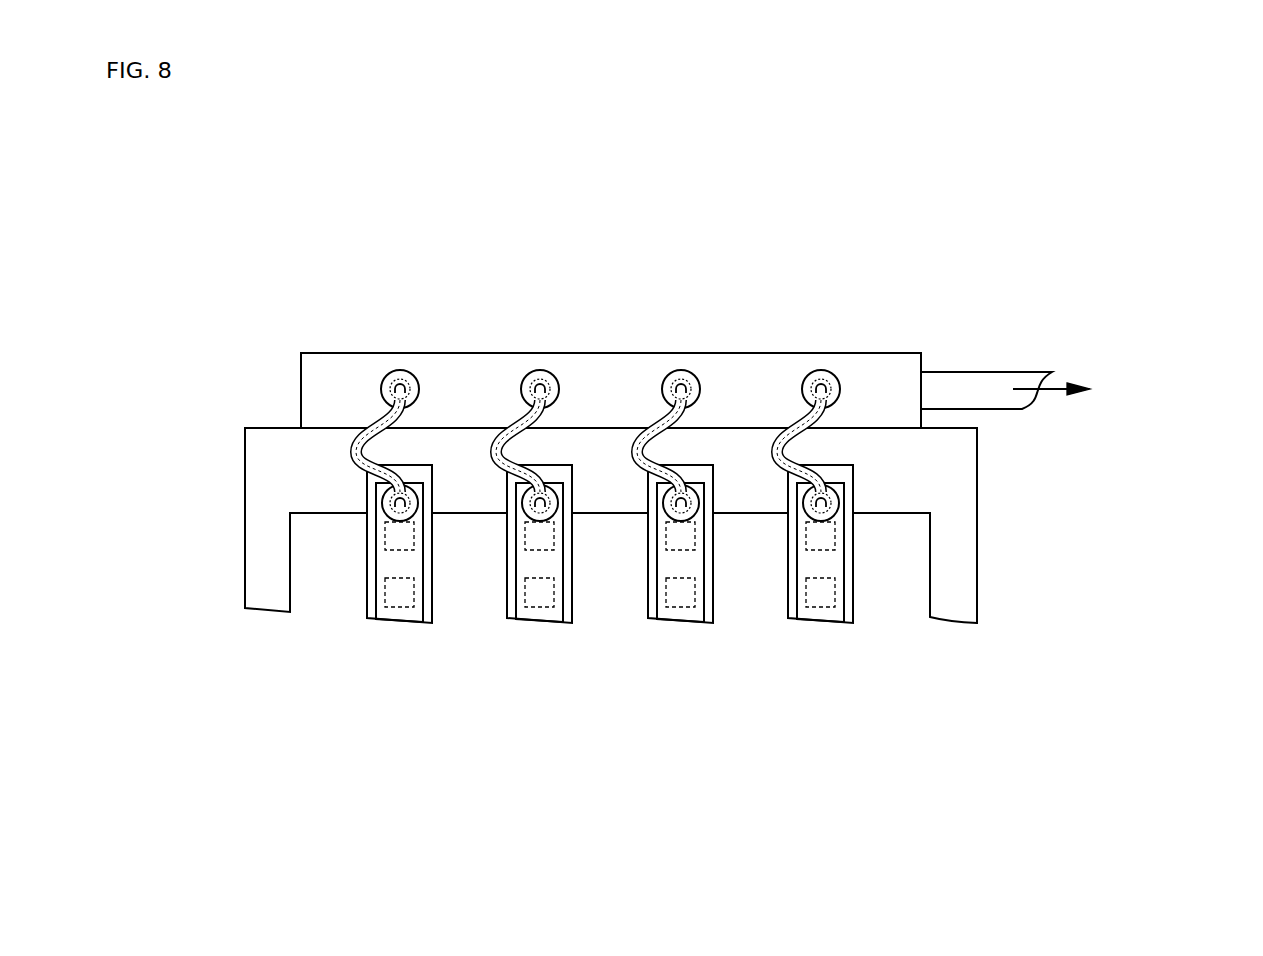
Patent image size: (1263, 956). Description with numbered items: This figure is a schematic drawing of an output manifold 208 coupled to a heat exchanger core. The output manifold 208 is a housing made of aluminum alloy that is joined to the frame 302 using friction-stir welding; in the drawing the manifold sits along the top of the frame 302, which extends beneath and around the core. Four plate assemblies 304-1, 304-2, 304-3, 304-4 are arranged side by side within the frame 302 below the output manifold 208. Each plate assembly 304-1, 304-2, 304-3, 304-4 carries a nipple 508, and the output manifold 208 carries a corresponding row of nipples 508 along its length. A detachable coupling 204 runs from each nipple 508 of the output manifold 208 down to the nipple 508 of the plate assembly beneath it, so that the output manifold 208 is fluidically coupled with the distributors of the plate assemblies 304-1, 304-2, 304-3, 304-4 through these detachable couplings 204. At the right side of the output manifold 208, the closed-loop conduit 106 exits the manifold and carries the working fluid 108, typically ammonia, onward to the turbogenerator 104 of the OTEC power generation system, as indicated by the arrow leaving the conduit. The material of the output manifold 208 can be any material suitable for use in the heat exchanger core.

The turbogenerator 104 is at (1120, 350).
The closed-loop conduit 106 is at (1002, 402).
The working fluid 108 is at (1048, 394).
The detachable couplings 204 is at (352, 456).
The output manifold 208 is at (301, 392).
The frame 302 is at (289, 459).
The plate assembly 304-1 is at (388, 622).
The plate assembly 304-2 is at (528, 622).
The plate assembly 304-3 is at (669, 622).
The plate assembly 304-4 is at (809, 622).
The nipples 508 is at (387, 385).